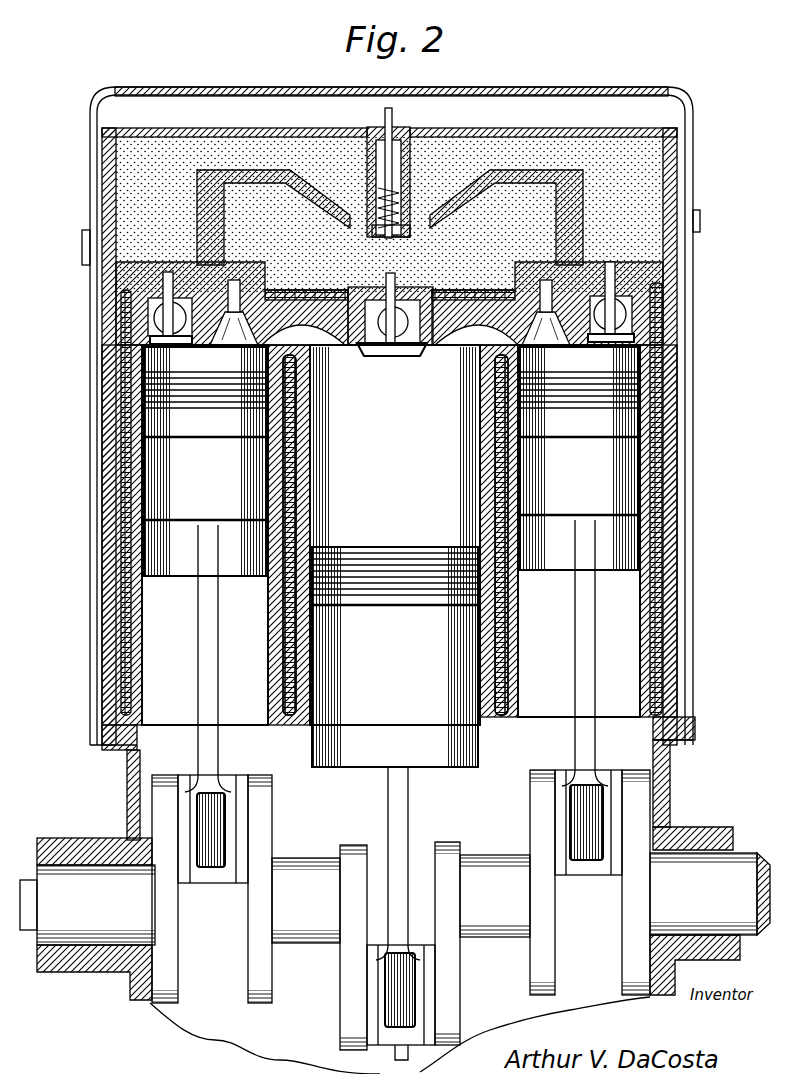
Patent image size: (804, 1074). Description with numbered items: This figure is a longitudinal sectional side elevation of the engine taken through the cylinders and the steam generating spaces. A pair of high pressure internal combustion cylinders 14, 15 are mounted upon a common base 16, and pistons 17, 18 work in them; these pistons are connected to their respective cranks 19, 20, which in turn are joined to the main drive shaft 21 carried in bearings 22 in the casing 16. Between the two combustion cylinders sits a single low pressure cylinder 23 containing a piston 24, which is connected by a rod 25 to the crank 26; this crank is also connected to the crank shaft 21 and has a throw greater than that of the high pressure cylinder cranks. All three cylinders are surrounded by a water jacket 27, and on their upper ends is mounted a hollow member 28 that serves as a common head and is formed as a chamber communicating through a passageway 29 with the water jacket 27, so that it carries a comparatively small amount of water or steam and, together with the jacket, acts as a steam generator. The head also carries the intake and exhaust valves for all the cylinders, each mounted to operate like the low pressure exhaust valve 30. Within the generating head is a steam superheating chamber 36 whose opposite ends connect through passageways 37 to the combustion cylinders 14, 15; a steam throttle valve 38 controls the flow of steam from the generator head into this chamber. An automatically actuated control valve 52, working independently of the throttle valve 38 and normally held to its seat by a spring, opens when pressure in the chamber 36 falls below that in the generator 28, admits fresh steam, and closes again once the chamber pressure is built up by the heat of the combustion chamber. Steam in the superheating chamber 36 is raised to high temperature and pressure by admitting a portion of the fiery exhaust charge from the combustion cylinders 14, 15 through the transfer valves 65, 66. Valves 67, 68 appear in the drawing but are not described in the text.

The high pressure internal combustion cylinder 14 is at (160, 638).
The high pressure internal combustion cylinder 15 is at (625, 648).
The common base 16 is at (138, 788).
The piston 17 is at (165, 470).
The piston 18 is at (630, 463).
The crank 19 is at (178, 828).
The crank 20 is at (635, 810).
The main drive shaft 21 is at (100, 950).
The bearings 22 is at (118, 975).
The low pressure cylinder 23 is at (416, 462).
The piston 24 is at (352, 567).
The rod 25 is at (412, 832).
The crank 26 is at (450, 1000).
The water jacket 27 is at (118, 556).
The hollow member 28 is at (112, 252).
The passageway 29 is at (110, 330).
The low pressure exhaust valve 30 is at (393, 360).
The steam superheating chamber 36 is at (255, 200).
The passageways 37 is at (240, 235).
The steam throttle valve 38 is at (425, 178).
The control valve 52 is at (395, 240).
The transfer valve 65 is at (232, 345).
The transfer valve 66 is at (545, 345).
The left exhaust valve 67 is at (172, 345).
The right exhaust valve 68 is at (606, 344).